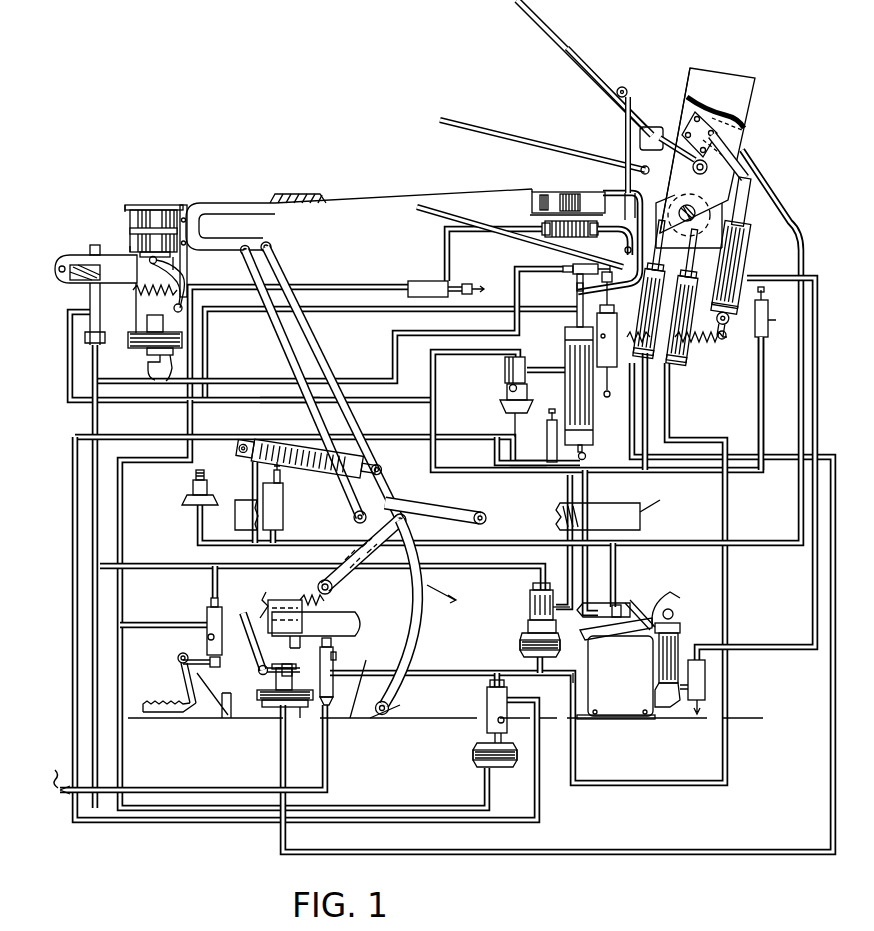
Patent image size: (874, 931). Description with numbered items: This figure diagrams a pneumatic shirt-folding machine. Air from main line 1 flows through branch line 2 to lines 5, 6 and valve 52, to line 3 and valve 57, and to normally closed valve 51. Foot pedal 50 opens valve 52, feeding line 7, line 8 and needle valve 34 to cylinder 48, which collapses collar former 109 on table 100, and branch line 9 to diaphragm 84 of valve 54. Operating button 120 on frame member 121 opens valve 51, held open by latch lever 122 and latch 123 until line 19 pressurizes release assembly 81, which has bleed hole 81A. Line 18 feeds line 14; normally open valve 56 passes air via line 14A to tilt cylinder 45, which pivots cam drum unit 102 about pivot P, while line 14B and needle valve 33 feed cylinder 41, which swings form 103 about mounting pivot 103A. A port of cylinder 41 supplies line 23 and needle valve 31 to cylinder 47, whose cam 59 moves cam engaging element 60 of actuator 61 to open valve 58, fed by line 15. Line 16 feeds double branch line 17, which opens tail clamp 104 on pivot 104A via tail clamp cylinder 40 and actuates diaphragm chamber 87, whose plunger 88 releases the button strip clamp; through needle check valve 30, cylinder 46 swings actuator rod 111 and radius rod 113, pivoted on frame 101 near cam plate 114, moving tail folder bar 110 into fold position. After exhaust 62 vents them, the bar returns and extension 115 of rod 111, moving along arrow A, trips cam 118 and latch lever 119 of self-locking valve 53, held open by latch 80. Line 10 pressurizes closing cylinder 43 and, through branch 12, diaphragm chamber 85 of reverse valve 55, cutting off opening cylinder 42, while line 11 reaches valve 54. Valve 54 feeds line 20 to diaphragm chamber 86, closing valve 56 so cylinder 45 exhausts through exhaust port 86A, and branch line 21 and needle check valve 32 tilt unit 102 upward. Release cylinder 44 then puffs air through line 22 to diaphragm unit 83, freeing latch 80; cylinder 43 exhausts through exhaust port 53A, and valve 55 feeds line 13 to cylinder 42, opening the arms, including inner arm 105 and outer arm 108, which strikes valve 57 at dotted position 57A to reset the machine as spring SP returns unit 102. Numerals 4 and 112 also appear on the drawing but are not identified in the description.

The fluid supply line 1 is at (57, 772).
The pressure line 2 is at (107, 360).
The pressure line 3 is at (250, 380).
The return line 4 is at (203, 790).
The pressure line 5 is at (162, 566).
The branch line 6 is at (214, 578).
The branch line 7 is at (147, 625).
The pressure line 8 is at (447, 248).
The return line 9 is at (138, 650).
The fluid line 10 is at (670, 435).
The branch line 11 is at (500, 680).
The branch line 12 is at (552, 664).
The fluid line 13 is at (646, 397).
The fluid line 14 is at (760, 383).
The branch line 14A is at (556, 368).
The fluid line 14B is at (434, 372).
The valve block 15 is at (586, 513).
The fluid line 16 is at (614, 558).
The fluid line 17 is at (782, 224).
The fluid line 18 is at (84, 365).
The fluid line 19 is at (338, 311).
The return line 20 is at (72, 568).
The branch line 21 is at (497, 456).
The return line 22 is at (630, 457).
The fluid line 23 is at (808, 278).
The control valve 30 is at (283, 514).
The control valve 31 is at (706, 686).
The control valve 32 is at (547, 452).
The control valve 33 is at (767, 330).
The cylinder 34 is at (438, 280).
The rocker lever 40 is at (728, 160).
The hydraulic cylinder 41 is at (750, 252).
The hydraulic cylinder 42 is at (668, 268).
The hydraulic cylinder 43 is at (698, 270).
The valve 44 is at (620, 322).
The hydraulic cylinder 45 is at (588, 410).
The hydraulic cylinder 46 is at (305, 465).
The hydraulic cylinder 47 is at (680, 640).
The cylinder 48 is at (600, 227).
The foot pedal 50 is at (186, 680).
The hand lever 51 is at (104, 301).
The valve 52 is at (208, 610).
The cylinder 53 is at (336, 660).
The port 53A is at (336, 650).
The valve 54 is at (487, 697).
The valve 55 is at (532, 620).
The solenoid valve 56 is at (505, 372).
The valve 57 is at (565, 268).
The valve element 57A is at (626, 248).
The plunger 58 is at (603, 603).
The pivot 59 is at (675, 613).
The lever 60 is at (665, 593).
The link 61 is at (650, 604).
The stop 62 is at (628, 604).
The lever 80 is at (256, 657).
The valve 81 is at (158, 350).
The valve outlet 81A is at (170, 360).
The diaphragm unit 83 is at (280, 707).
The diaphragm unit 84 is at (473, 765).
The diaphragm unit 85 is at (520, 646).
The diaphragm unit 86 is at (528, 396).
The pin 86A is at (509, 396).
The diaphragm unit 87 is at (185, 497).
The adjusting screw 88 is at (198, 472).
The boom arm 100 is at (412, 197).
The engine 101 is at (636, 732).
The bucket 102 is at (748, 118).
The bucket link 103 is at (550, 33).
The link pivot 103A is at (692, 167).
The lever 104 is at (624, 86).
The pivot 104A is at (618, 96).
The rod 105 is at (566, 148).
The rod 108 is at (464, 218).
The bearing block 109 is at (565, 192).
The pad 110 is at (290, 195).
The links 111 is at (281, 263).
The pivot 112 is at (390, 705).
The fluid line 113 is at (302, 399).
The link 114 is at (438, 502).
The pivot 115 is at (316, 584).
The lever 118 is at (342, 588).
The yoke 119 is at (270, 604).
The reservoir 120 is at (150, 205).
The cover 121 is at (126, 209).
The piston 122 is at (132, 255).
The valve lever 123 is at (215, 275).
The direction of movement A is at (437, 587).
The pivot P is at (678, 220).
The spring SP is at (706, 340).